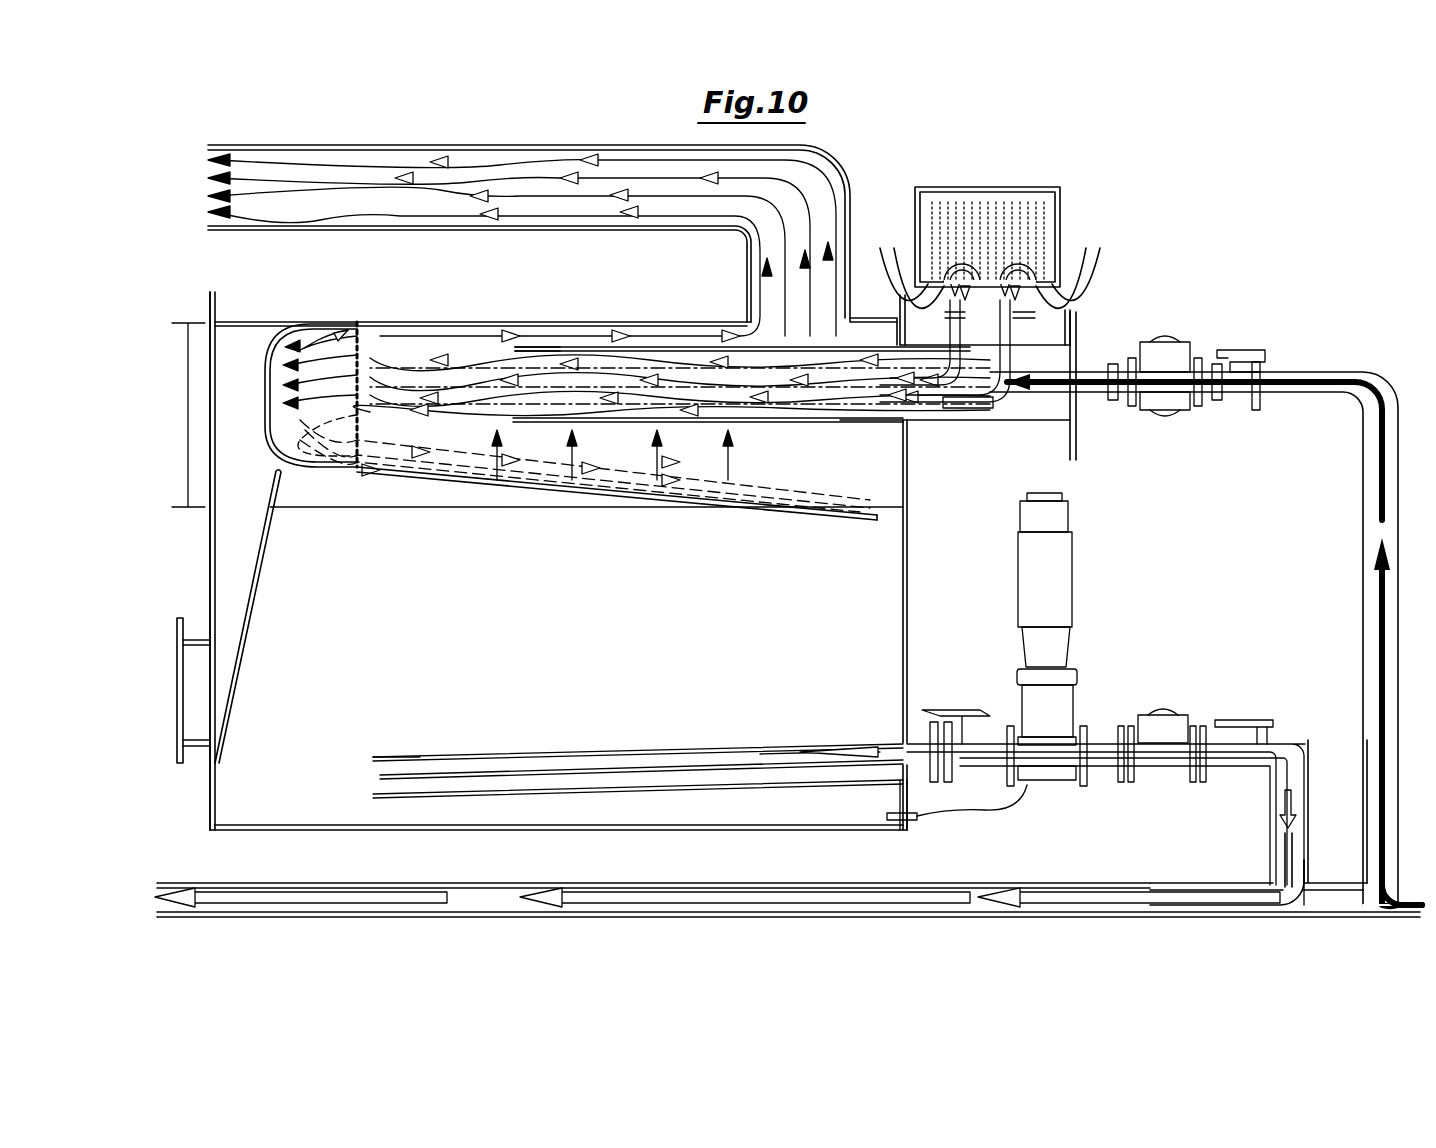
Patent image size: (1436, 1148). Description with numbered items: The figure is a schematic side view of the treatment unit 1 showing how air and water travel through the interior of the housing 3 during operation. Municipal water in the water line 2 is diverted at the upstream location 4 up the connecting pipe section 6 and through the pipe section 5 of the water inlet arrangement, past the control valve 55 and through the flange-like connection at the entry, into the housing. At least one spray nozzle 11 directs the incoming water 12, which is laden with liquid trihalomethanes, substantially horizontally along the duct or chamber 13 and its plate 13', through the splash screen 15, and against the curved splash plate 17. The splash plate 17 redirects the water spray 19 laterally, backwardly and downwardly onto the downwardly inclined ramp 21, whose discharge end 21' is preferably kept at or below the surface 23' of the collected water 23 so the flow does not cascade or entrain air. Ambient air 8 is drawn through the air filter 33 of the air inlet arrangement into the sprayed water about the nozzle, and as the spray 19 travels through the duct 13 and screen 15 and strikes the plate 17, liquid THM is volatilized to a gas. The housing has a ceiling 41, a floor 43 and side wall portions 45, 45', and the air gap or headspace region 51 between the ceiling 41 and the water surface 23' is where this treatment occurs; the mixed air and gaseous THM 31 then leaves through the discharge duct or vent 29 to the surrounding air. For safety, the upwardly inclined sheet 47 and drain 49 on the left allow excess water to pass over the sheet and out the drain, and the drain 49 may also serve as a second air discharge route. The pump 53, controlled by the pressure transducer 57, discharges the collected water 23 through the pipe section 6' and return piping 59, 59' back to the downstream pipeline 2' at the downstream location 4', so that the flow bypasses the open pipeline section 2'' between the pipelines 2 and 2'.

The treatment unit 1 is at (1150, 208).
The municipal water line 2 is at (1402, 869).
The municipal pipeline (downstream) 2' is at (787, 881).
The open pipeline section 2'' is at (1335, 811).
The housing 3 is at (462, 318).
The upstream location 4 is at (1336, 815).
The downstream location 4' is at (1227, 869).
The pipe section 5 is at (1320, 372).
The pipe section 6 is at (1365, 722).
The pipe section 6' is at (1257, 809).
The ambient air 8 is at (862, 358).
The spray nozzle 11 is at (970, 412).
The incoming water 12 is at (1080, 376).
The duct or chamber 13 is at (671, 350).
The inner duct plate 13' is at (538, 316).
The splash screen 15 is at (359, 345).
The splash plate 17 is at (265, 385).
The water spray 19 is at (288, 456).
The inclined ramp 21 is at (617, 515).
The discharge end of ramp 21' is at (863, 538).
The collected water 23 is at (497, 642).
The surface of collected water 23' is at (586, 529).
The discharge duct or vent 29 is at (525, 145).
The mixed air and gaseous THM 31 is at (380, 168).
The air filter 33 is at (1047, 200).
The ceiling 41 is at (643, 320).
The floor 43 is at (277, 826).
The side wall portion 45 is at (942, 625).
The side wall portion 45' is at (184, 561).
The upwardly inclined sheet 47 is at (258, 586).
The drain 49 is at (178, 690).
The air gap or headspace region 51 is at (187, 414).
The pump 53 is at (1075, 600).
The control valve 55 is at (1240, 348).
The pressure transducer or sensor 57 is at (886, 812).
The air pipe 59 is at (839, 801).
The air pipe end 59' is at (381, 733).